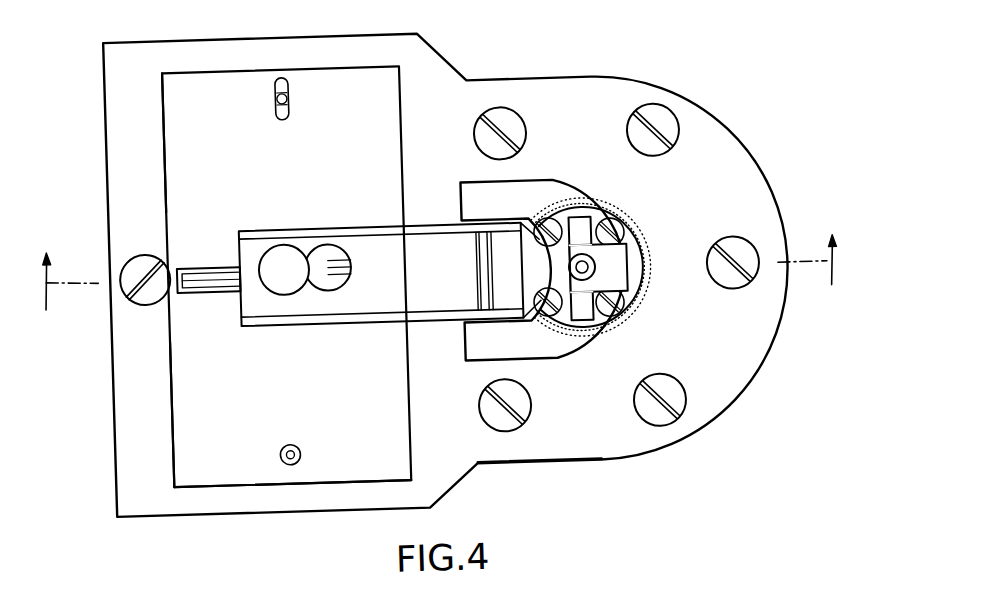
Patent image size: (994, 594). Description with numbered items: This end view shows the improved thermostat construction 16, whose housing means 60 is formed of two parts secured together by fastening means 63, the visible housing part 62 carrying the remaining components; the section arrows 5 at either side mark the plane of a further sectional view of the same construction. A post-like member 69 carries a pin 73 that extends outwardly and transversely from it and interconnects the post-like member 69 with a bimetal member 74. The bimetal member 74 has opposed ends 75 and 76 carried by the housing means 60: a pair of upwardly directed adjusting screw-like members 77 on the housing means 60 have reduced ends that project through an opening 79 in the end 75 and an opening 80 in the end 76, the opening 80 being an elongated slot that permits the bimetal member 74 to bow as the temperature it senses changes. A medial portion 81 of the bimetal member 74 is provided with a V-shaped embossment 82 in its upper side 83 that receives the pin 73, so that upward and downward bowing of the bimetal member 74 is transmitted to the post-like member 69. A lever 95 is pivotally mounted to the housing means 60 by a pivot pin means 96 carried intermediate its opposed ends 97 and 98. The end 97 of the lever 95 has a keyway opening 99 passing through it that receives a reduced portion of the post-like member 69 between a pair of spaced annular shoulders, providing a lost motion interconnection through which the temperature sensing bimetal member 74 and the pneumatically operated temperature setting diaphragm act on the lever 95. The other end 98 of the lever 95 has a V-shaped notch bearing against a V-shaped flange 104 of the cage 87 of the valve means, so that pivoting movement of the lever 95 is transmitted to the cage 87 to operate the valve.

The section line 5- 5 is at (441, 270).
The thermostat construction 16 is at (782, 78).
The housing means 60 is at (743, 350).
The housing part 62 is at (594, 455).
The fastening means 63 is at (517, 110).
The post-like member 69 is at (282, 255).
The pin 73 is at (200, 269).
The bimetal member 74 is at (171, 386).
The end of bimetal member 75 is at (244, 477).
The end of bimetal member 76 is at (361, 65).
The adjusting screw-like members 77 is at (283, 109).
The opening 79 is at (278, 446).
The elongated slot 80 is at (288, 69).
The medial portion 81 is at (174, 296).
The V-shaped embossment 82 is at (214, 281).
The upper side 83 is at (177, 100).
The cage 87 is at (599, 314).
The lever 95 is at (423, 217).
The pivot pin means 96 is at (478, 255).
The end of lever 97 is at (251, 222).
The other end of lever 98 is at (620, 263).
The keyway opening 99 is at (330, 258).
The V-shaped flange 104 is at (585, 262).